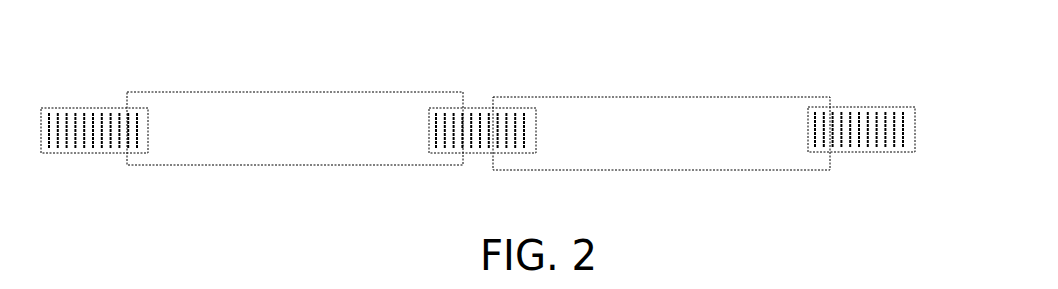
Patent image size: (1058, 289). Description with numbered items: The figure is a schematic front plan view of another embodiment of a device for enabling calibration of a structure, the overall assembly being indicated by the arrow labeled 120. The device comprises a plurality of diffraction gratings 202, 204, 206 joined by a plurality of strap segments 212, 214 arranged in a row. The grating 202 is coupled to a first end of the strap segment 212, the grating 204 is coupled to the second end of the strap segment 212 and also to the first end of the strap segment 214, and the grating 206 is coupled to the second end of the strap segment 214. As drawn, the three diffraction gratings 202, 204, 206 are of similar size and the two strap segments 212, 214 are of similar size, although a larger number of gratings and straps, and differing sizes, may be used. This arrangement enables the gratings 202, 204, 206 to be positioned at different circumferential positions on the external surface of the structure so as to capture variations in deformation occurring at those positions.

The flexible circuit / interconnect assembly 120 is at (692, 67).
The diffraction grating 202 is at (96, 108).
The diffraction grating 204 is at (483, 108).
The diffraction grating 206 is at (872, 65).
The strap segment 212 is at (207, 92).
The strap segment 214 is at (569, 97).